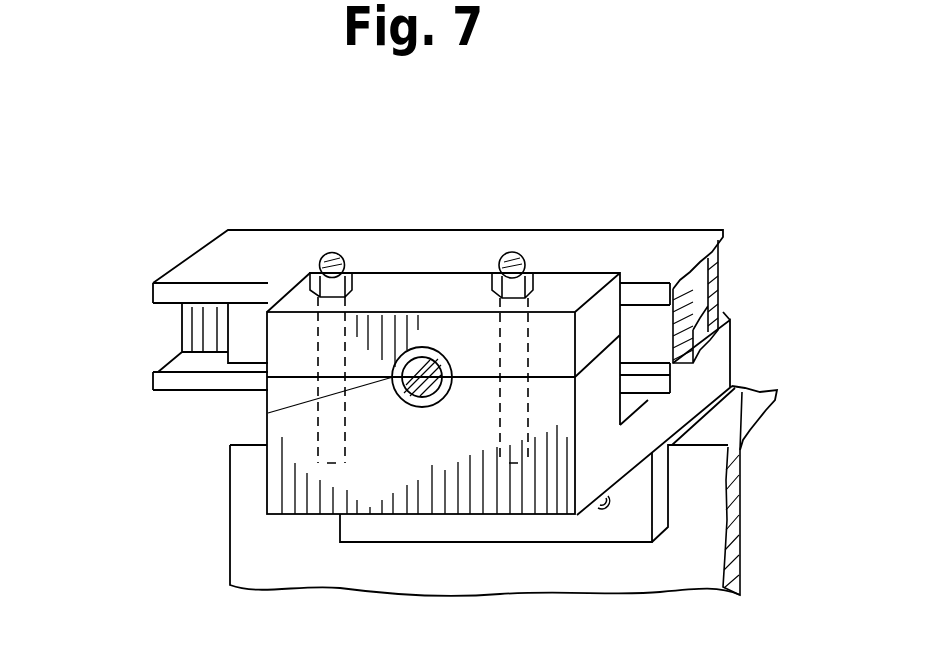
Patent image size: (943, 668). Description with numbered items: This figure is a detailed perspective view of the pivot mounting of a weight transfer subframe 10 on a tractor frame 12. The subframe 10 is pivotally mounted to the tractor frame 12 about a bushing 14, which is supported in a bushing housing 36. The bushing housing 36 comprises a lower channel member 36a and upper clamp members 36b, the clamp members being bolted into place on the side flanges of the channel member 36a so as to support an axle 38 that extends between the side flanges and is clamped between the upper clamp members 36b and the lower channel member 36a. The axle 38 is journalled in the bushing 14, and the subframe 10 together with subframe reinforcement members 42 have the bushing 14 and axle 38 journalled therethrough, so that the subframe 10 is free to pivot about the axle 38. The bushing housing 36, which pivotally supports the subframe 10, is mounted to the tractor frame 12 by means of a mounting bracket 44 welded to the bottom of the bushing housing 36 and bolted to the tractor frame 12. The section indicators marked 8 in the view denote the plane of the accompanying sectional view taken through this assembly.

The section line 8- 8 is at (422, 177).
The subframe 10 is at (435, 245).
The tractor frame 12 is at (648, 577).
The bushing 14 is at (403, 400).
The bushing housing 36 is at (238, 402).
The lower channel member 36a is at (642, 433).
The upper clamp members 36b is at (565, 282).
The axle 38 is at (268, 407).
The subframe reinforcement members 42 is at (250, 322).
The mounting bracket 44 is at (383, 527).